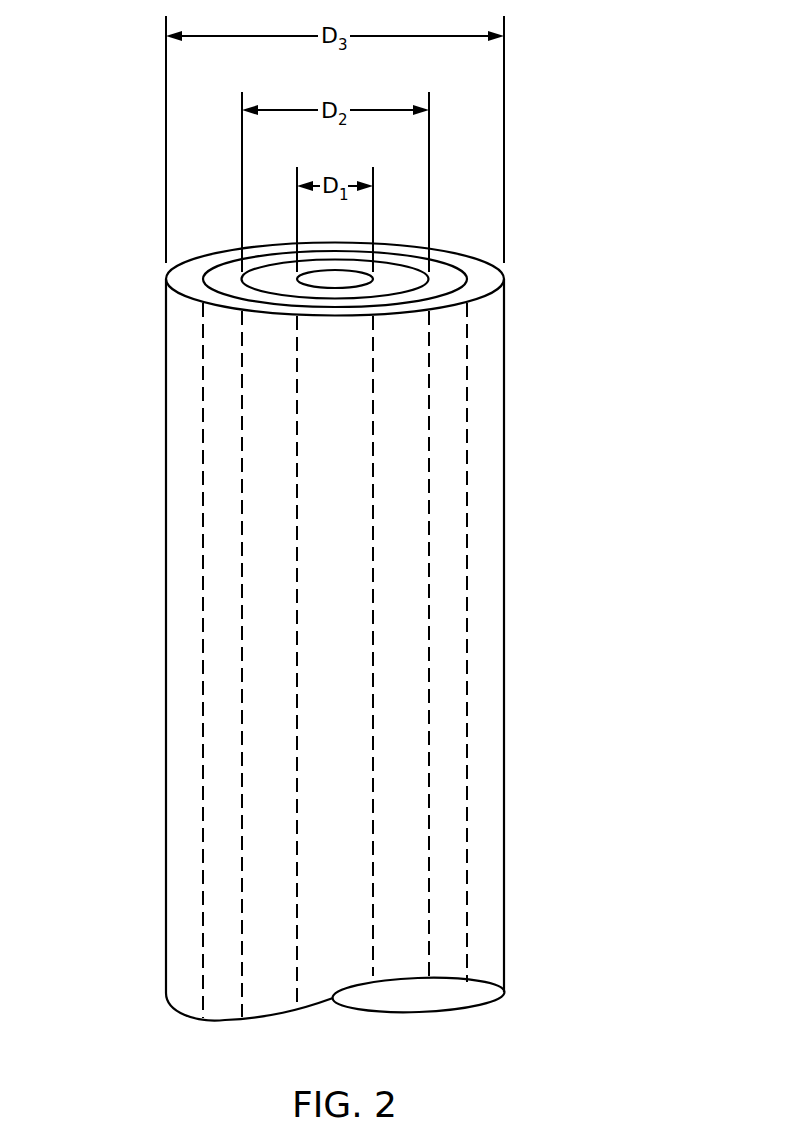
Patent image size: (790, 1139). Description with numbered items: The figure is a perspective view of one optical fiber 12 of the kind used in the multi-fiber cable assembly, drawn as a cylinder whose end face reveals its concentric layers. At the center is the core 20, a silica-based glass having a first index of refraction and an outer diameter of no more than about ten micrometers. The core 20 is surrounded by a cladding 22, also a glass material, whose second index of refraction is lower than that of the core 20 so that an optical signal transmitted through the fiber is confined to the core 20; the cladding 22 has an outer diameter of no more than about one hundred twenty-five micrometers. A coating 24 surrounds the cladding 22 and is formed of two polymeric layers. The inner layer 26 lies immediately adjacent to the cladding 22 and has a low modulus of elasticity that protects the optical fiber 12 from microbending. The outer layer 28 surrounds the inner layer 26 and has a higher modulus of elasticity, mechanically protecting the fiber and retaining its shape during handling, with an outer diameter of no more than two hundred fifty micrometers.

The optical fiber 12 is at (109, 412).
The core 20 is at (373, 410).
The cladding 22 is at (429, 538).
The coating 24 is at (510, 613).
The inner layer 26 is at (203, 739).
The outer layer 28 is at (165, 645).